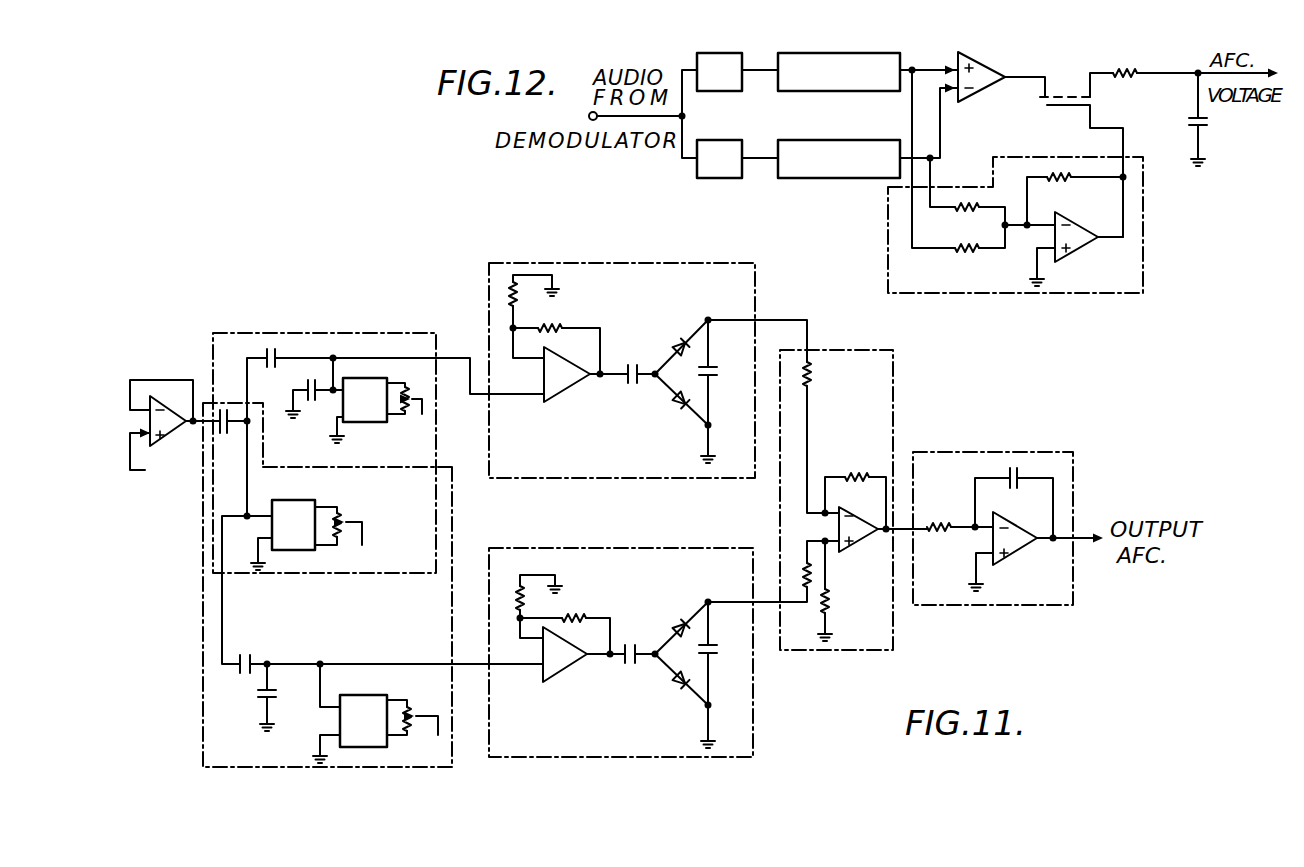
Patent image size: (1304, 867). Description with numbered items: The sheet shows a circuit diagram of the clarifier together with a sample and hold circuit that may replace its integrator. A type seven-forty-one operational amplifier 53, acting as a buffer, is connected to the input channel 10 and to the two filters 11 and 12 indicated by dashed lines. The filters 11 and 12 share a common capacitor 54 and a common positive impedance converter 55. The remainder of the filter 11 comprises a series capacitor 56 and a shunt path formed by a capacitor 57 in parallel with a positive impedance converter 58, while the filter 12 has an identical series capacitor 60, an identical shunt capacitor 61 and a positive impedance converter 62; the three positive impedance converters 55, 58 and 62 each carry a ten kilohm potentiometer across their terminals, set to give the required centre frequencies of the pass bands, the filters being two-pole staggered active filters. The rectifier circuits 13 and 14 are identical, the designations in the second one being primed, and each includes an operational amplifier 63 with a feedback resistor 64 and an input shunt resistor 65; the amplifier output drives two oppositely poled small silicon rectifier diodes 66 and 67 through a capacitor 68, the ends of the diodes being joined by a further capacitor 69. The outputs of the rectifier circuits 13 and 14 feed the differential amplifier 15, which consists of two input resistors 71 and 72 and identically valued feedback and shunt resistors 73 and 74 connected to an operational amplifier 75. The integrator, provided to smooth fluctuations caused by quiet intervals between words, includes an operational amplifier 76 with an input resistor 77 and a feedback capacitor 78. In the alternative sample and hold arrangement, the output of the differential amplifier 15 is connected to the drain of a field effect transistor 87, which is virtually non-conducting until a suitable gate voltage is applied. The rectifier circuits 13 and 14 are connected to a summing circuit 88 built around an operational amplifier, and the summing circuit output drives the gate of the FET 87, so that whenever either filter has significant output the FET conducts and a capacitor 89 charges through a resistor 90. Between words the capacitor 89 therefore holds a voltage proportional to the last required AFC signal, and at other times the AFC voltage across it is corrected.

In FIG. 11, the input channel 10 is at (153, 458).
In FIG. 12, the filter 11 is at (716, 92).
In FIG. 11, the filter 11 is at (347, 333).
In FIG. 12, the filter 12 is at (752, 126).
In FIG. 12, the rectifier circuit 13 is at (796, 92).
In FIG. 11, the rectifier circuit 13 is at (757, 273).
In FIG. 12, the rectifier circuit 14 is at (870, 128).
In FIG. 11, the rectifier circuit 14 is at (753, 717).
In FIG. 12, the differential amplifier 15 is at (989, 63).
In FIG. 11, the differential amplifier 15 is at (893, 443).
In FIG. 11, the operational amplifier 53 is at (170, 395).
In FIG. 11, the capacitor 54 is at (238, 435).
In FIG. 11, the positive impedance converter 55 is at (305, 500).
In FIG. 11, the series capacitor 56 is at (265, 351).
In FIG. 11, the capacitor 57 is at (317, 403).
In FIG. 11, the positive impedance converter 58 is at (353, 426).
In FIG. 11, the series capacitor 60 is at (251, 657).
In FIG. 11, the shunt capacitor 61 is at (261, 703).
In FIG. 11, the positive impedance converter 62 is at (403, 650).
In FIG. 11, the operational amplifier 63 is at (579, 386).
In FIG. 11, the feedback resistor 64 is at (546, 326).
In FIG. 11, the input shunt resistor 65 is at (511, 308).
In FIG. 11, the rectifier diode 66 is at (676, 342).
In FIG. 11, the rectifier diode 67 is at (682, 396).
In FIG. 11, the capacitor 68 is at (643, 344).
In FIG. 11, the capacitor 69 is at (722, 378).
In FIG. 11, the input resistor 71 is at (813, 378).
In FIG. 11, the input resistor 72 is at (800, 572).
In FIG. 11, the feedback resistor 73 is at (870, 448).
In FIG. 11, the shunt resistor 74 is at (834, 607).
In FIG. 11, the operational amplifier 75 is at (866, 538).
In FIG. 11, the operational amplifier 76 is at (1008, 468).
In FIG. 11, the input resistor 77 is at (956, 506).
In FIG. 11, the feedback capacitor 78 is at (1005, 561).
In FIG. 12, the field effect transistor 87 is at (1072, 92).
In FIG. 12, the summing circuit 88 is at (1143, 222).
In FIG. 12, the capacitor 89 is at (1190, 145).
In FIG. 12, the resistor 90 is at (1112, 88).